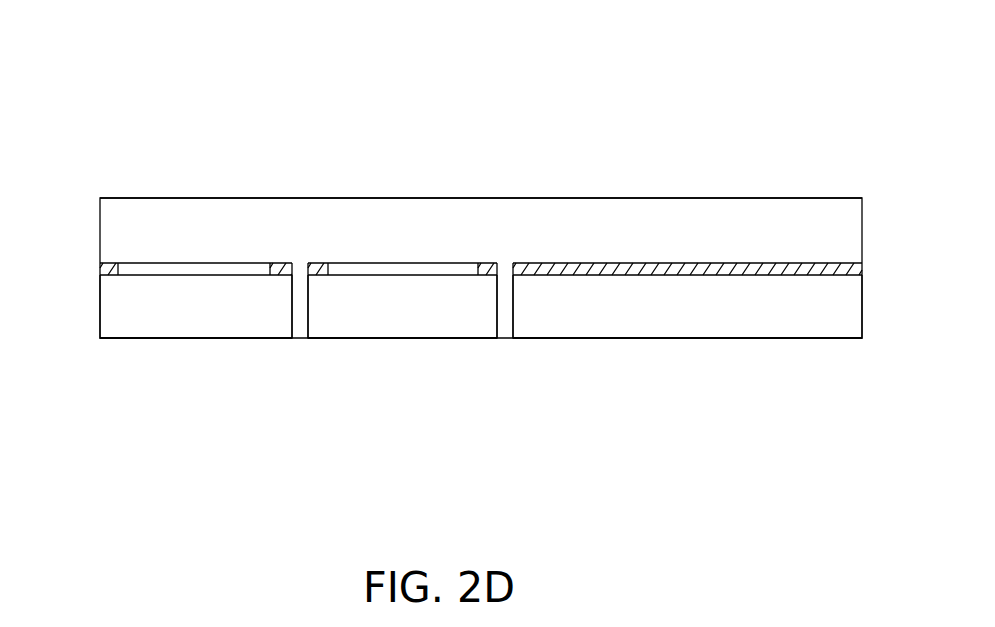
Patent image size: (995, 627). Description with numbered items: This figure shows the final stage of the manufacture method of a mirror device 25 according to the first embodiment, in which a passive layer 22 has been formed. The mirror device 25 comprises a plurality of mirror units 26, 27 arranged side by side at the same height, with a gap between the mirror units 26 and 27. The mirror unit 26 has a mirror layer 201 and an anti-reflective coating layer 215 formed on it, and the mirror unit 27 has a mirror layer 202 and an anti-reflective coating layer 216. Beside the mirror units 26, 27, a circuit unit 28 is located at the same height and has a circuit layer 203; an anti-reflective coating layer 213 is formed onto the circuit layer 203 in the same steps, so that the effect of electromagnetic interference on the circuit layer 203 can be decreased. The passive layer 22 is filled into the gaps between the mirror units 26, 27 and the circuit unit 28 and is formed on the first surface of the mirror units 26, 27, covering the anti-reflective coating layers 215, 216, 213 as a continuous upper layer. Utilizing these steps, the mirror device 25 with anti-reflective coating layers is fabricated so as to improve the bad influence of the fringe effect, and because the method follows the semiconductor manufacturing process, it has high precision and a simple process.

The passive layer 22 is at (755, 218).
The mirror device 25 is at (788, 128).
The mirror unit 26 is at (92, 351).
The mirror unit 27 is at (405, 343).
The circuit unit 28 is at (797, 343).
The mirror layer 201 is at (130, 320).
The mirror layer 202 is at (340, 320).
The circuit layer 203 is at (638, 318).
The anti-reflective coating layer 213 is at (620, 264).
The anti-reflective coating layer 215 is at (117, 262).
The anti-reflective coating layer 216 is at (322, 263).